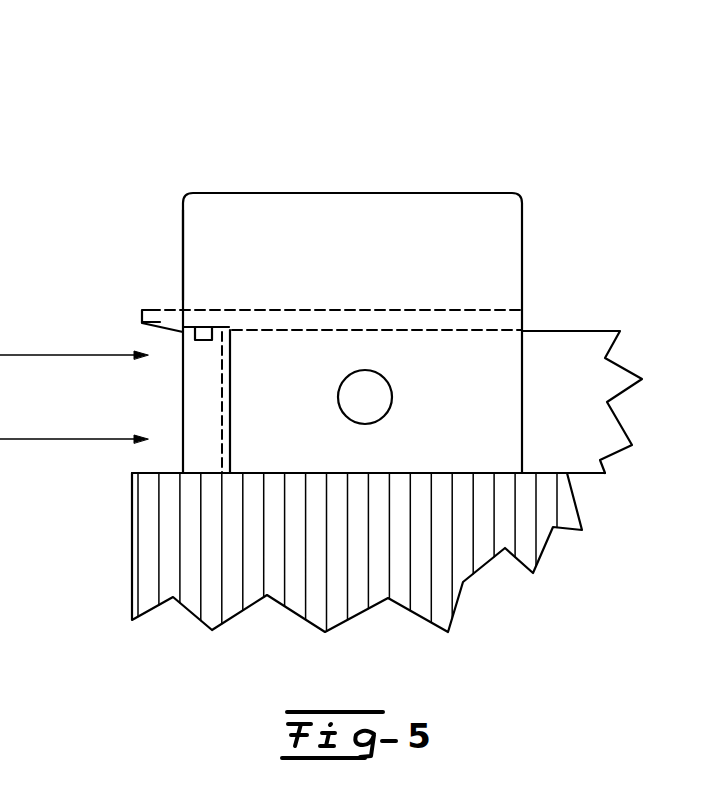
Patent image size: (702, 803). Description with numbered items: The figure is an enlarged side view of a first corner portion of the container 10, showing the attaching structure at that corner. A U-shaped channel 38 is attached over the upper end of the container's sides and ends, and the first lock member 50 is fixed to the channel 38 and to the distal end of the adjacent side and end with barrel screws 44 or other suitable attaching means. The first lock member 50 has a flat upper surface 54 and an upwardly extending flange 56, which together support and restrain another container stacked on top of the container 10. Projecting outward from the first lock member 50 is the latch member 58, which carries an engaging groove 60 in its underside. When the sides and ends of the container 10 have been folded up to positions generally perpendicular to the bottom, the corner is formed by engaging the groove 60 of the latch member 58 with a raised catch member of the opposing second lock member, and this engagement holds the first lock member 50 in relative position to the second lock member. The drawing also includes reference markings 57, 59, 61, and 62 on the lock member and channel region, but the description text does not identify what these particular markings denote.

The container 10 is at (117, 576).
The U-shaped channel 38 is at (578, 440).
The barrel screws 44 is at (378, 398).
The first lock member 50 is at (487, 110).
The flat upper surface 54 is at (485, 309).
The upwardly extending flange 56 is at (236, 258).
The top edge 57 is at (352, 193).
The latch member 58 is at (163, 318).
The side wall 59 is at (183, 213).
The engaging groove 60 is at (190, 336).
The slot 61 is at (523, 293).
The tab 62 is at (147, 333).